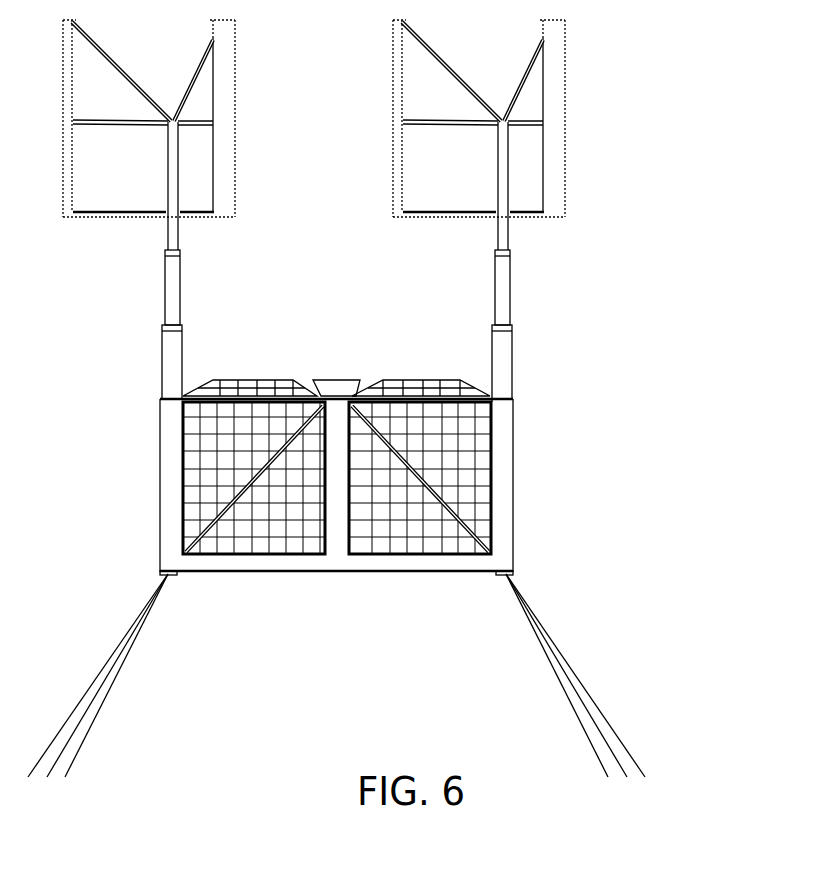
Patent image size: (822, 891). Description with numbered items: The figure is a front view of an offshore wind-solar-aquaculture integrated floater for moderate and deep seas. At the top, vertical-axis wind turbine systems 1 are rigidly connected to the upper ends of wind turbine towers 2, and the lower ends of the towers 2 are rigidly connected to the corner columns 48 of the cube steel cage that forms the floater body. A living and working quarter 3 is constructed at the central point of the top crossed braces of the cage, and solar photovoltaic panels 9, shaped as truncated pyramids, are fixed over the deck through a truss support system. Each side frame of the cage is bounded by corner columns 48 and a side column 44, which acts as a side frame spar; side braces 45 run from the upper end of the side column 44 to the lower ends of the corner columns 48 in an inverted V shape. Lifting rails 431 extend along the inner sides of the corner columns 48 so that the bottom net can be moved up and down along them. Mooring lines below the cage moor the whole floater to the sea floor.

The vertical-axis wind turbine system 1 is at (553, 152).
The wind turbine tower 2 is at (505, 370).
The living and working quarter 3 is at (333, 388).
The solar photovoltaic panel 9 is at (447, 372).
The side column 44 is at (332, 490).
The lifting rail 431 is at (352, 510).
The side brace 45 is at (443, 510).
The corner column 48 is at (507, 530).